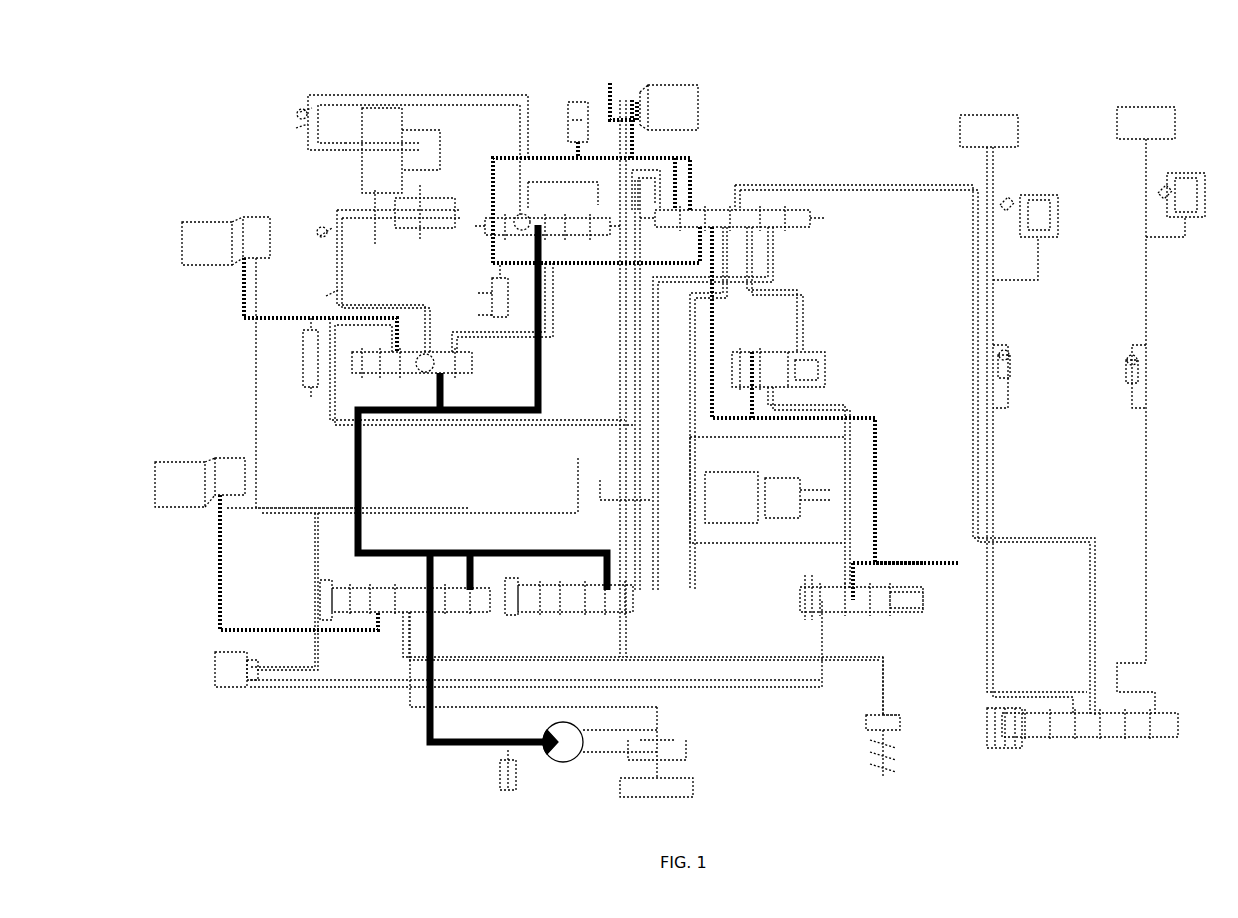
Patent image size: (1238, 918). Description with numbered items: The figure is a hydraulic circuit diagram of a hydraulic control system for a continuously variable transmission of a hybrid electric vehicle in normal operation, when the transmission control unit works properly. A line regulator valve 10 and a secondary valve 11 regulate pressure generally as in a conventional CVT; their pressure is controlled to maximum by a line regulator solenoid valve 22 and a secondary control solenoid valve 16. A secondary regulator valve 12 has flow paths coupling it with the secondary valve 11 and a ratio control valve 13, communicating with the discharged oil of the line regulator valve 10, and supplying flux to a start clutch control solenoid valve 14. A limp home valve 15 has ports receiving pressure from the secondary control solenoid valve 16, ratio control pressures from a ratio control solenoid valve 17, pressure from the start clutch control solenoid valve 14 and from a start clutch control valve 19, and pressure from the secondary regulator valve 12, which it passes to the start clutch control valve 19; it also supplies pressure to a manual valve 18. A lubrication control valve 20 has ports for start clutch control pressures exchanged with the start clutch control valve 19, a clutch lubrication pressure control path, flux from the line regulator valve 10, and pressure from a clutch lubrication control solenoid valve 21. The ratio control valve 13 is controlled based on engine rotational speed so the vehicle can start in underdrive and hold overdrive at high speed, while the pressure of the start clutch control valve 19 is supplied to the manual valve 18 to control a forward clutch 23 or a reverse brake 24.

The line regulator valve 10 is at (412, 620).
The secondary valve 11 is at (393, 378).
The secondary regulator valve 12 is at (594, 616).
The ratio control valve 13 is at (569, 246).
The start clutch control solenoid valve 14 is at (738, 520).
The limp home valve 15 is at (711, 196).
The secondary control solenoid valve 16 is at (205, 232).
The ratio control solenoid valve 17 is at (672, 100).
The manual valve 18 is at (1100, 742).
The start clutch control valve 19 is at (812, 350).
The lubrication control valve 20 is at (916, 618).
The clutch lubrication control solenoid valve 21 is at (220, 668).
The line regulator solenoid valve 22 is at (176, 470).
The forward clutch 23 is at (988, 118).
The reverse brake 24 is at (1146, 112).